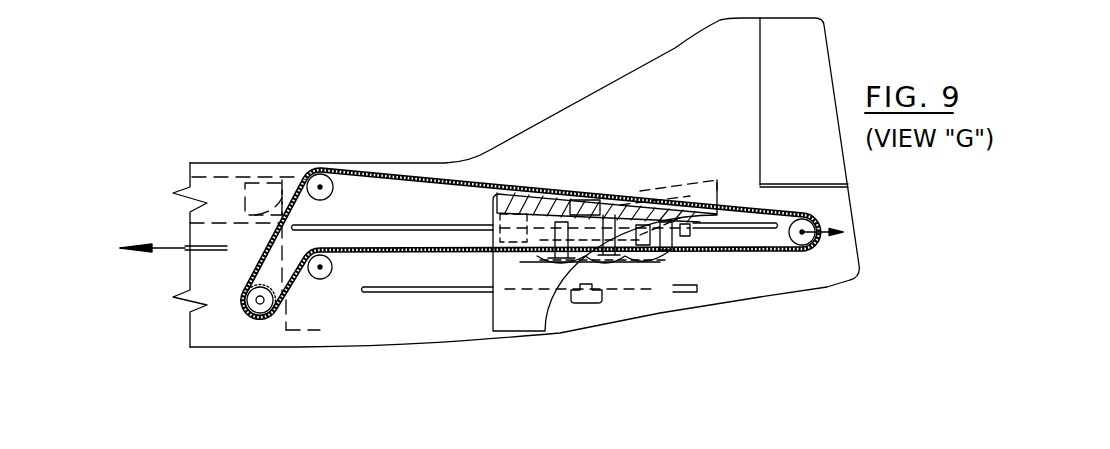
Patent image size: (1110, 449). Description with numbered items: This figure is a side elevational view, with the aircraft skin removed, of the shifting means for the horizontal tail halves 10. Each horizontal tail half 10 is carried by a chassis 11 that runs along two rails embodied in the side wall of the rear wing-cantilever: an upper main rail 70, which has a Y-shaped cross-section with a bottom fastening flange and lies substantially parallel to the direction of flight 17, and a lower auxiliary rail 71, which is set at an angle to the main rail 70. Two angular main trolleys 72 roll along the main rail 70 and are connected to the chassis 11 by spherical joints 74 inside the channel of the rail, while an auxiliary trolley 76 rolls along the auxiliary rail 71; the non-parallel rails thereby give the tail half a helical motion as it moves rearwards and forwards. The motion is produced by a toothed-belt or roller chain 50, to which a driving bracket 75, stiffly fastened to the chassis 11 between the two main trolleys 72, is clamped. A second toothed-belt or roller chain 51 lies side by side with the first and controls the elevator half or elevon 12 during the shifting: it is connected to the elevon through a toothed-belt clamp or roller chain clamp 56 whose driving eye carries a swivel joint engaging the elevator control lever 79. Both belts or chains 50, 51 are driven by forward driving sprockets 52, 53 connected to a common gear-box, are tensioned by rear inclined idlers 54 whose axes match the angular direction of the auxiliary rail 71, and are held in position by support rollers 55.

The horizontal tail half 10 is at (540, 198).
The chassis of the horizontal tail half 11 is at (643, 300).
The elevator half or elevon 12 is at (683, 183).
The direction of flight 17 is at (169, 248).
The toothed-belt or roller chain for horizontal tail motions 50 is at (285, 154).
The toothed-belt or roller chain for elevator or elevon control 51 is at (348, 168).
The driving sprocket for horizontal tail motions 52 is at (254, 350).
The driving sprocket for elevator or elevon control 53 is at (257, 316).
The inclined idler 54 is at (818, 247).
The support roller 55 is at (322, 190).
The toothed-belt clamp or roller chain clamp with driving eye 56 is at (688, 234).
The main rail 70 is at (592, 224).
The auxiliary rail 71 is at (453, 292).
The main trolley 72 is at (457, 223).
The spherical joint 74 is at (505, 200).
The driving bracket 75 is at (558, 263).
The auxiliary trolley 76 is at (592, 303).
The elevator or elevon control lever 79 is at (580, 197).